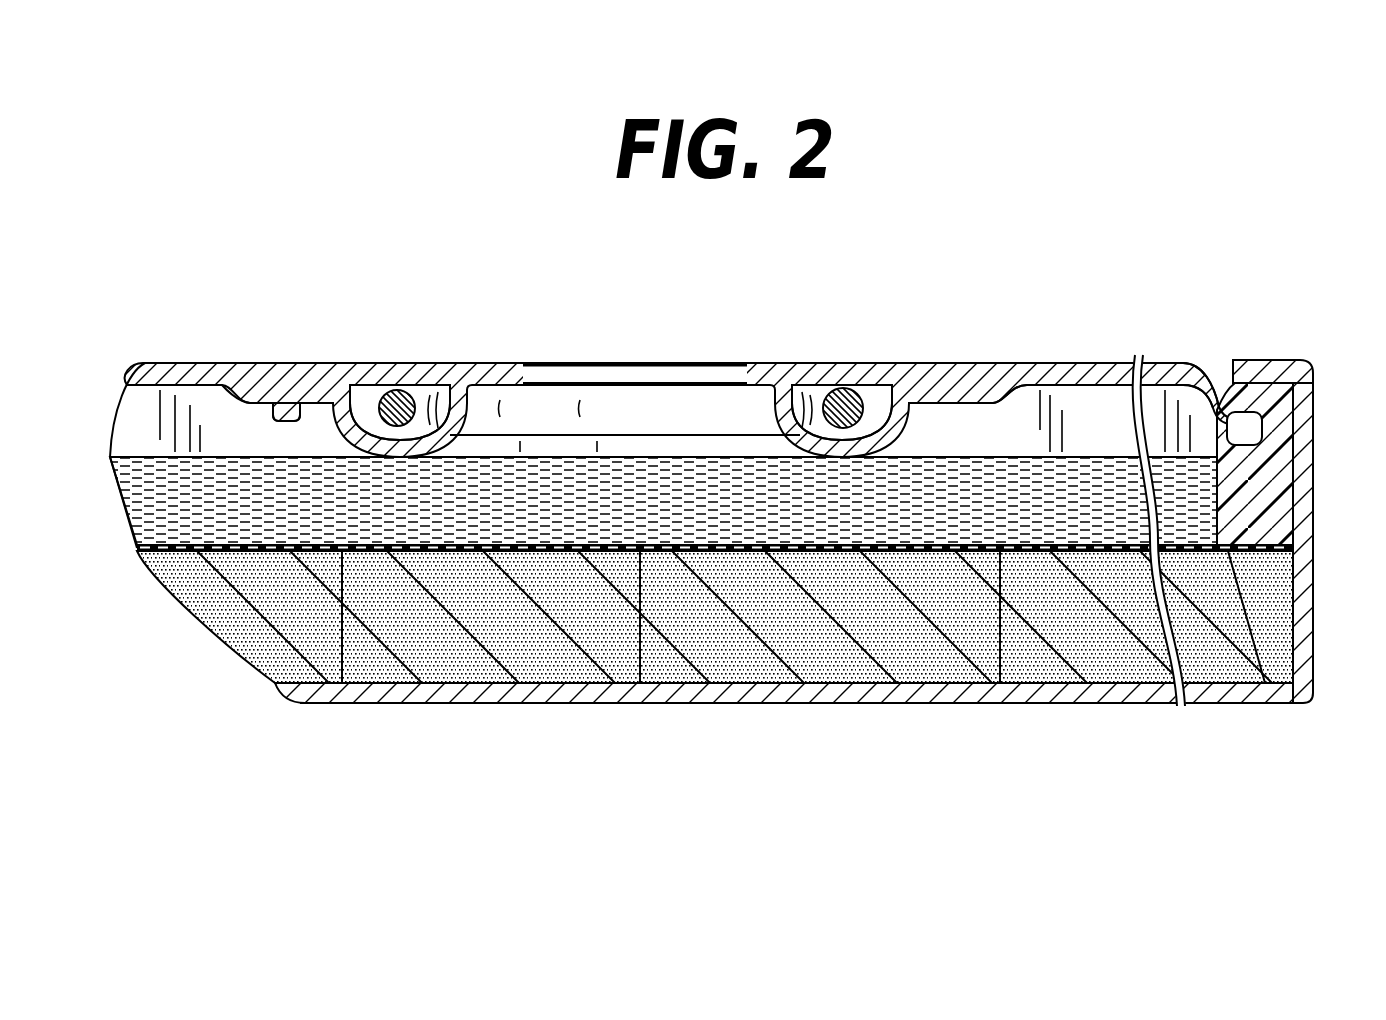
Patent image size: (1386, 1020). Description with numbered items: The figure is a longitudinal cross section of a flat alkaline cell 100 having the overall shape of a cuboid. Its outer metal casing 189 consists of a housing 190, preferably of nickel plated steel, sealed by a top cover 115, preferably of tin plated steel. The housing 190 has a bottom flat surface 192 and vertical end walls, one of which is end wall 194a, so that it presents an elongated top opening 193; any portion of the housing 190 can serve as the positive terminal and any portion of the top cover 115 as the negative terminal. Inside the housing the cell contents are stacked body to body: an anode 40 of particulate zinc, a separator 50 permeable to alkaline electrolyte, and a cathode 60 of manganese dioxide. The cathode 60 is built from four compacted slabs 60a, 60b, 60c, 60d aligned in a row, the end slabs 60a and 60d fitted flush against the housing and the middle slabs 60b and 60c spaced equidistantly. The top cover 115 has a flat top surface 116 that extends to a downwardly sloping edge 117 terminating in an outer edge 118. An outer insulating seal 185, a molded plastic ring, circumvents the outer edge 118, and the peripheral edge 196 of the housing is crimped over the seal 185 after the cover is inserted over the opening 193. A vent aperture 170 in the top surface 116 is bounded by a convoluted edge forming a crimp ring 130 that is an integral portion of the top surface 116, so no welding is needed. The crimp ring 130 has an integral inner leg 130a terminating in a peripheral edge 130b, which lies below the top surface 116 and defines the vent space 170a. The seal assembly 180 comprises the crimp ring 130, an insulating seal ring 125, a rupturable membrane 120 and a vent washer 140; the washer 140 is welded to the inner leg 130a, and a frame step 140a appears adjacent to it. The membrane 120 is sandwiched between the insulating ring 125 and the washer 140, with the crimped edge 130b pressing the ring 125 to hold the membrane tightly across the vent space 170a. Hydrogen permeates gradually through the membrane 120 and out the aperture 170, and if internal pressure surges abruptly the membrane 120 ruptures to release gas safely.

The alkaline cell 100 is at (222, 248).
The crimp ring 130 is at (172, 362).
The flat top surface 116 is at (200, 362).
The inner leg 130a is at (300, 418).
The frame step 140a is at (347, 362).
The insulating seal ring 125 is at (414, 423).
The peripheral edge 130b is at (428, 448).
The vent aperture 170 is at (615, 370).
The rupturable membrane 120 is at (682, 368).
The vent space 170a is at (693, 447).
The vent washer 140 is at (826, 365).
The seal assembly 180 is at (927, 365).
The top cover 115 is at (1063, 363).
The downwardly sloping edge 117 is at (1220, 373).
The elongated top opening 193 is at (1223, 372).
The peripheral edge of housing 196 is at (1260, 360).
The outer edge 118 is at (1262, 428).
The outer insulating seal 185 is at (1277, 487).
The vertical end wall 194a is at (1315, 543).
The outer metal casing 189 is at (1317, 650).
The anode 40 is at (225, 503).
The separator 50 is at (693, 550).
The cathode 60 is at (437, 665).
The cathode slab 60a is at (283, 633).
The cathode slab 60b is at (557, 665).
The cathode slab 60c is at (833, 665).
The cathode slab 60d is at (1117, 665).
The housing 190 is at (963, 707).
The bottom flat surface 192 is at (737, 707).